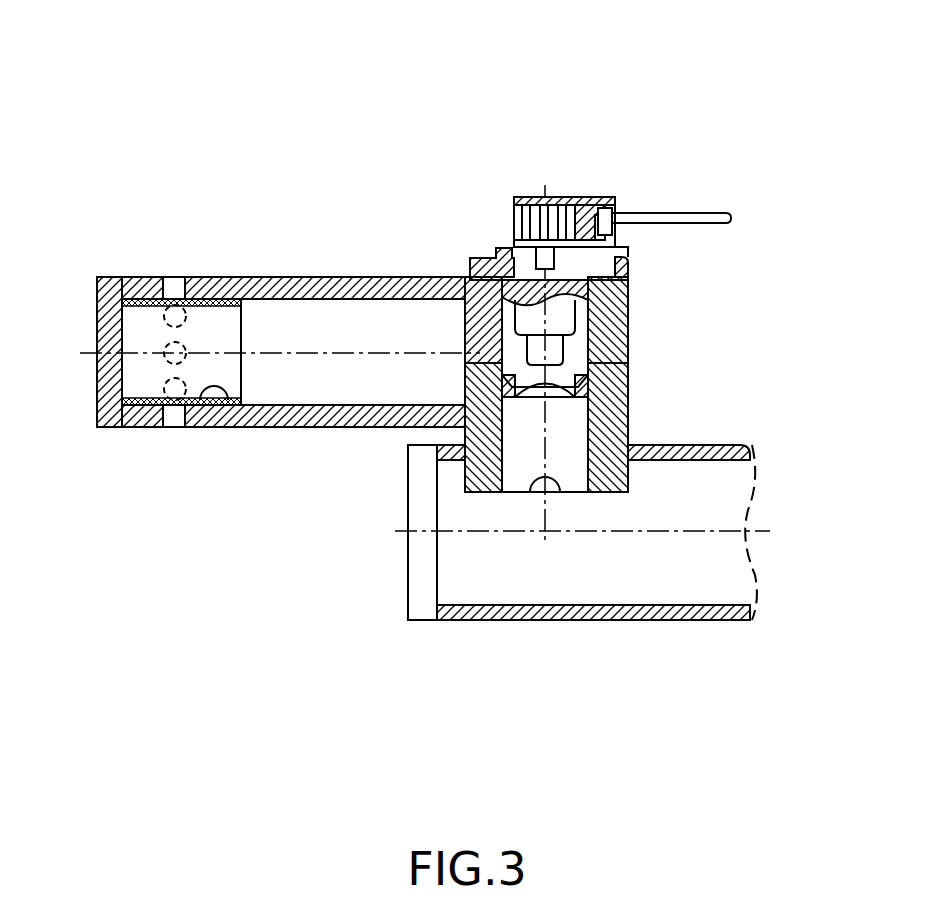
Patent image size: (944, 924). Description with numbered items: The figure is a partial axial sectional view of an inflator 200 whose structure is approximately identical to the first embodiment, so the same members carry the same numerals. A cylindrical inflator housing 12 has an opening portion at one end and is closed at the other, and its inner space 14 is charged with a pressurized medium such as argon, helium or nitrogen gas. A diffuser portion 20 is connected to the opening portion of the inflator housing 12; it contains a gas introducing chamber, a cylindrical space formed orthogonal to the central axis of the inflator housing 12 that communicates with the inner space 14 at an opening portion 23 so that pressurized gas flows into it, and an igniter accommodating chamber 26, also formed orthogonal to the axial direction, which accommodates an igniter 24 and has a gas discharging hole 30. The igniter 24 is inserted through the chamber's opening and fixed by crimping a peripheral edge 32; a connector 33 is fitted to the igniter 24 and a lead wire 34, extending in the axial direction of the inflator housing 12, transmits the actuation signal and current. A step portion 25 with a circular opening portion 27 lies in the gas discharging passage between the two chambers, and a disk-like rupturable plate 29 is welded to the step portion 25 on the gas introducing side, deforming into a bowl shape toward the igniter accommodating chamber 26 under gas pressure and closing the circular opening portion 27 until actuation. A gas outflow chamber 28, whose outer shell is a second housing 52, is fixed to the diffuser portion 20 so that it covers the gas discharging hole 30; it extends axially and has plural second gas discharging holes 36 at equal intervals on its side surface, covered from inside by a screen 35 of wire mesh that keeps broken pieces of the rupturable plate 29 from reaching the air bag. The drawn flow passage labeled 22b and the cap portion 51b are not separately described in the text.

The inflator 200 is at (374, 606).
The diffuser portion 20 is at (529, 152).
The second housing 52 is at (317, 277).
The gas outflow chamber 28 is at (293, 346).
The second gas discharging holes 36 is at (173, 292).
The screen 35 is at (205, 312).
The step portion 25 is at (445, 398).
The gas discharging hole 30 is at (482, 332).
The bore / flow passage 22b is at (517, 478).
The opening portion 23 is at (562, 487).
The igniter accommodating chamber 26 is at (608, 342).
The circular opening portion 27 is at (467, 388).
The rupturable plate 29 is at (608, 385).
The peripheral edge 32 is at (618, 247).
The cap flange 51b is at (630, 290).
The igniter 24 is at (482, 254).
The connector 33 is at (558, 197).
The lead wire 34 is at (698, 213).
The inflator housing 12 is at (700, 620).
The inner space 14 is at (668, 516).